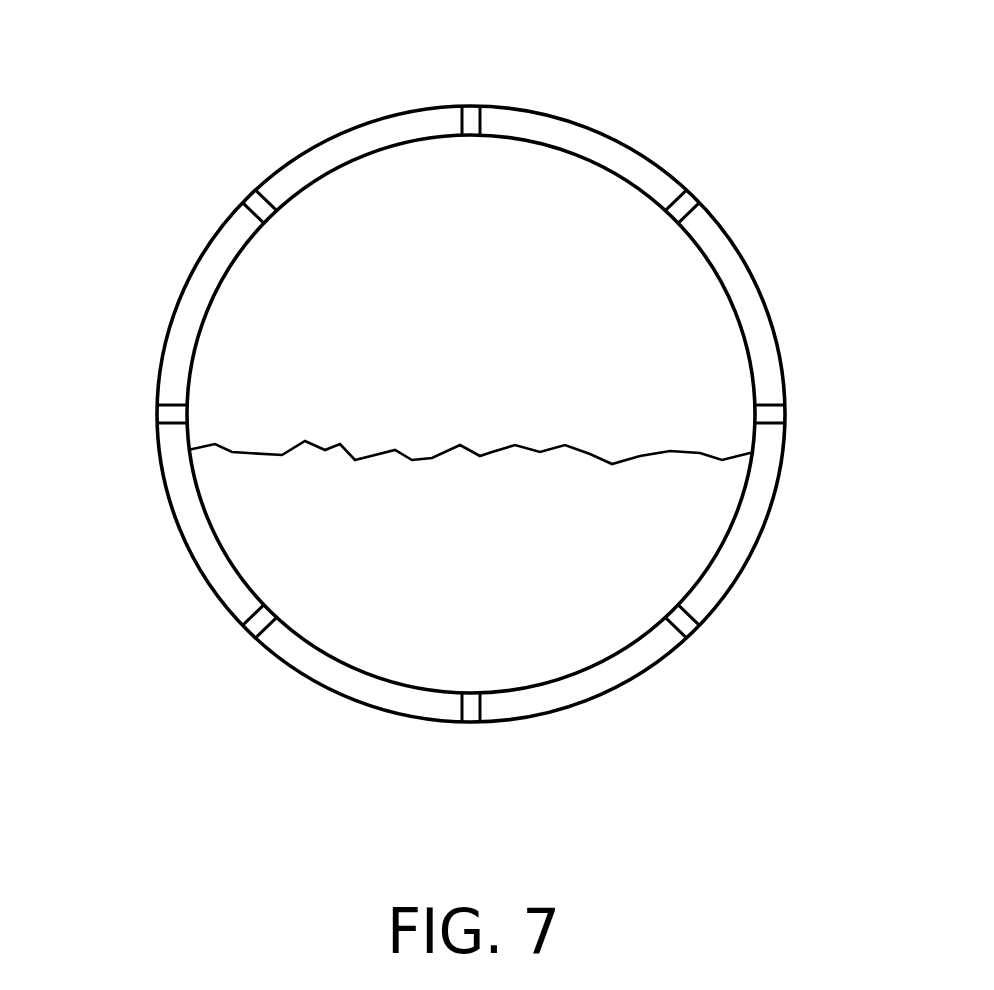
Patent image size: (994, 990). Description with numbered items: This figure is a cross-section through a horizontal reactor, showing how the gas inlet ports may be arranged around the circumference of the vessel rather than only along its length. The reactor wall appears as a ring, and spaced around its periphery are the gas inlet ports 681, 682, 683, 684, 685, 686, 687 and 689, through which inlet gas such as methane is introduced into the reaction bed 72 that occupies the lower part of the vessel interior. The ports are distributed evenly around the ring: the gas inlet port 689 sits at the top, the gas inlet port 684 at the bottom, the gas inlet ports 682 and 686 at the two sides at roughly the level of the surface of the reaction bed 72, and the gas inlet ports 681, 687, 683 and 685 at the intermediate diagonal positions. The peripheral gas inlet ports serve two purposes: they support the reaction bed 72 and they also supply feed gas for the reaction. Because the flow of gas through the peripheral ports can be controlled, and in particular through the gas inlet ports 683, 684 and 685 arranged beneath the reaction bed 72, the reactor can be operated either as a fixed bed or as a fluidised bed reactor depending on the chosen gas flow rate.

The reaction bed 72 is at (280, 528).
The gas inlet port 681 is at (248, 195).
The gas inlet port 682 is at (157, 410).
The gas inlet port 683 is at (248, 635).
The gas inlet port 684 is at (467, 727).
The gas inlet port 685 is at (693, 633).
The gas inlet port 686 is at (787, 414).
The gas inlet port 687 is at (695, 195).
The gas inlet port 689 is at (470, 105).